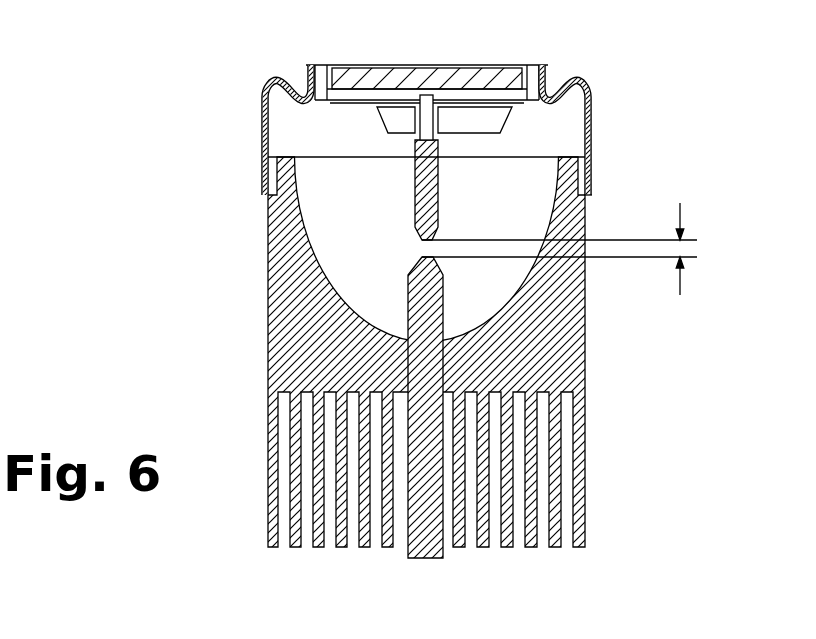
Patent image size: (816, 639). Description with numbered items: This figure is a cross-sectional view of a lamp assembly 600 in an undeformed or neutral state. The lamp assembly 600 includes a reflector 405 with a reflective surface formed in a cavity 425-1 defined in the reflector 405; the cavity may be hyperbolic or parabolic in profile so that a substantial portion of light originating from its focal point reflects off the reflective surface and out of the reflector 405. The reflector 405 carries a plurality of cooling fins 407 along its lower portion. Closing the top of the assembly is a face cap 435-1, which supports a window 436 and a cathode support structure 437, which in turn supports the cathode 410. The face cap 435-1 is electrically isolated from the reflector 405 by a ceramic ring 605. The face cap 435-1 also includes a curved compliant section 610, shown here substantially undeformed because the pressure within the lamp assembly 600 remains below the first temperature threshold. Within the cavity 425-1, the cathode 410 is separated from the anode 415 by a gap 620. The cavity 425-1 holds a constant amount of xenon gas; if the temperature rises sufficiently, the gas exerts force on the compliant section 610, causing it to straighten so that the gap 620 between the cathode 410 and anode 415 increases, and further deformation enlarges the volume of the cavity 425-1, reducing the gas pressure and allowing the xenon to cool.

The lamp assembly 600 is at (140, 42).
The compliant section 610 is at (281, 78).
The cathode support structure 437 is at (380, 120).
The window 436 is at (428, 65).
The cathode 410 is at (438, 170).
The face cap 435-1 is at (250, 150).
The ceramic ring 605 is at (588, 196).
The cavity 425-1 is at (334, 241).
The gap 620 is at (708, 249).
The reflector 405 is at (598, 323).
The cooling fins 407 is at (585, 492).
The anode 415 is at (413, 559).